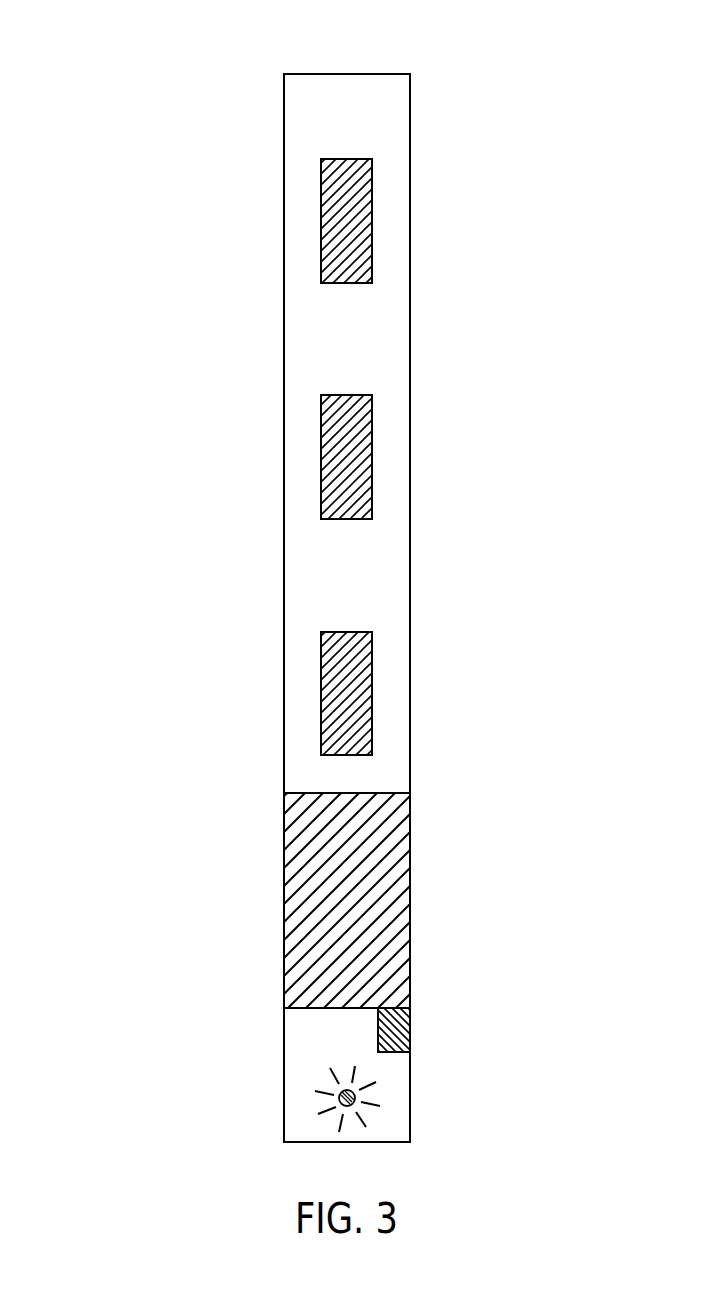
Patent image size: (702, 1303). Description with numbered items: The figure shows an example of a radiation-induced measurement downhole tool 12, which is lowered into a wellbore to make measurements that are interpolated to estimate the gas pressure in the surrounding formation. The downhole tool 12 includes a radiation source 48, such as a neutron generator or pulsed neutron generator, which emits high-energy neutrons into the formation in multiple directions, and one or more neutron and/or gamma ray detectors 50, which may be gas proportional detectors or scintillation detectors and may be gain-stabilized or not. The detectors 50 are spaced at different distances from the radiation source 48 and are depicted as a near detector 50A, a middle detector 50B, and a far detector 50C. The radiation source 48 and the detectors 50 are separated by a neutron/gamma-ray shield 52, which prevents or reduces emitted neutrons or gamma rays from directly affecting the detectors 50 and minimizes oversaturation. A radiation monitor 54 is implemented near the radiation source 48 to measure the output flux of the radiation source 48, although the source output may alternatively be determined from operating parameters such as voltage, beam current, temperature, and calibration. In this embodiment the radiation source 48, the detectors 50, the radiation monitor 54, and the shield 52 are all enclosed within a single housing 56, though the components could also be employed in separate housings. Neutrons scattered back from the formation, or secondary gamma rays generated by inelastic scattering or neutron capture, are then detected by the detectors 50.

The downhole tool 12 is at (136, 80).
The radiation source 48 is at (354, 1090).
The detectors 50 is at (449, 456).
The near detector 50A is at (373, 688).
The middle detector 50B is at (373, 452).
The far detector 50C is at (373, 215).
The neutron/gamma-ray shield 52 is at (388, 902).
The radiation monitor 54 is at (405, 1038).
The housing 56 is at (284, 443).